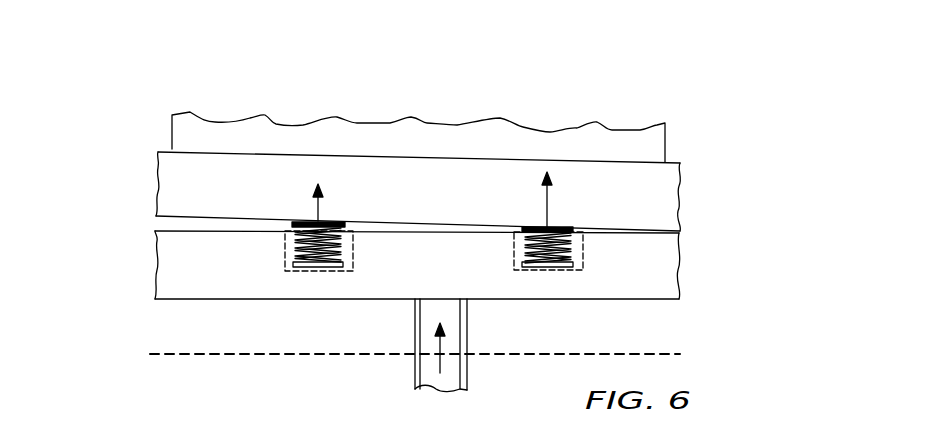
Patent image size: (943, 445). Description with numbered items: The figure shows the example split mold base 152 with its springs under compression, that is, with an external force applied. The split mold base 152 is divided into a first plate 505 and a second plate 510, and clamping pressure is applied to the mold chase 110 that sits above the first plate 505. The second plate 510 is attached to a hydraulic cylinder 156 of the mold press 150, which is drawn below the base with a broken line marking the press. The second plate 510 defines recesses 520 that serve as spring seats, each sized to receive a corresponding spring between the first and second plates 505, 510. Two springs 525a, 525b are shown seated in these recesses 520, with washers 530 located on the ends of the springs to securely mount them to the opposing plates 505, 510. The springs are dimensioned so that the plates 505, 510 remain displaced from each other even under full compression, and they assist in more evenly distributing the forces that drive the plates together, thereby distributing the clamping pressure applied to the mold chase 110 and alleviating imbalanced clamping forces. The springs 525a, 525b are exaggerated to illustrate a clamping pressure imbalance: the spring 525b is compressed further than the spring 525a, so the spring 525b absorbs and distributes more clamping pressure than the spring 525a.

The split mold base 152 is at (190, 79).
The mold chase 110 is at (172, 133).
The first plate 505 is at (156, 182).
The second plate 510 is at (156, 268).
The spring 525a is at (291, 242).
The spring 525b is at (522, 243).
The washer 530 is at (345, 263).
The recess 520 is at (569, 268).
The mold press 150 is at (170, 374).
The hydraulic cylinder 156 is at (467, 372).